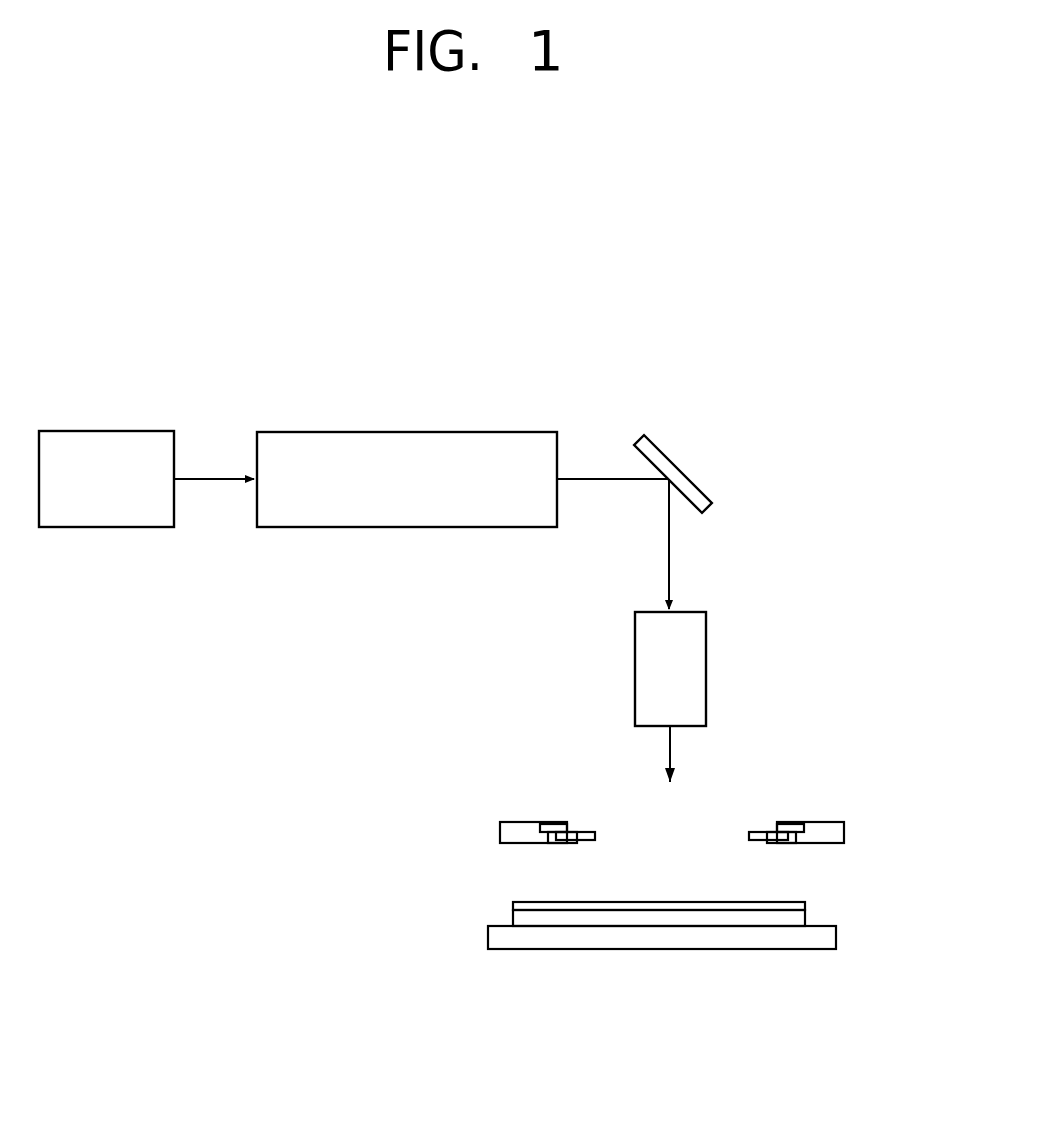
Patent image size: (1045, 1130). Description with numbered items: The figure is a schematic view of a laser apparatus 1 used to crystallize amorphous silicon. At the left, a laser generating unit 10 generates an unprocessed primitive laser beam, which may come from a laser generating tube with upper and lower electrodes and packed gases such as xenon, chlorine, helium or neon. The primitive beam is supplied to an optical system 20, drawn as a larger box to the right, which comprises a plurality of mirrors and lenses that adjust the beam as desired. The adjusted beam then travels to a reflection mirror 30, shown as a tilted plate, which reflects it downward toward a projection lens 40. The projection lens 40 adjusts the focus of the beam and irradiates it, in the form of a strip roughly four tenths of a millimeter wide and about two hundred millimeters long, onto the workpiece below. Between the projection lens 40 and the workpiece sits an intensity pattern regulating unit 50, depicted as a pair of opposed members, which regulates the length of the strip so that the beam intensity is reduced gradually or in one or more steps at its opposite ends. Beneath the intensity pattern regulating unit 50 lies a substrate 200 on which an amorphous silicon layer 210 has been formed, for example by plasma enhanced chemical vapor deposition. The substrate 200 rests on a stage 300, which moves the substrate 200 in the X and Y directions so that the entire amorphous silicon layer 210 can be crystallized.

The laser apparatus 1 is at (494, 313).
The laser generating unit 10 is at (104, 431).
The optical system 20 is at (403, 431).
The reflection mirror 30 is at (680, 470).
The projection lens 40 is at (706, 652).
The intensity pattern regulating unit 50 is at (857, 808).
The amorphous silicon layer 210 is at (805, 905).
The substrate 200 is at (806, 918).
The stage 300 is at (836, 933).